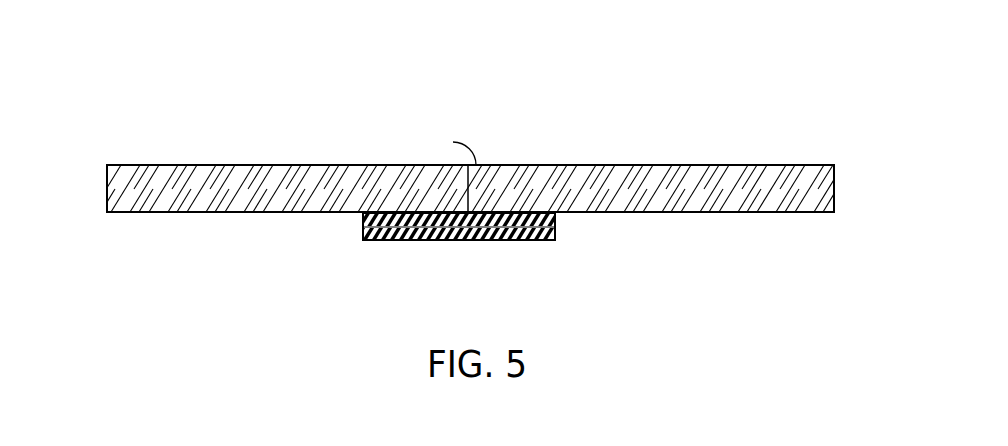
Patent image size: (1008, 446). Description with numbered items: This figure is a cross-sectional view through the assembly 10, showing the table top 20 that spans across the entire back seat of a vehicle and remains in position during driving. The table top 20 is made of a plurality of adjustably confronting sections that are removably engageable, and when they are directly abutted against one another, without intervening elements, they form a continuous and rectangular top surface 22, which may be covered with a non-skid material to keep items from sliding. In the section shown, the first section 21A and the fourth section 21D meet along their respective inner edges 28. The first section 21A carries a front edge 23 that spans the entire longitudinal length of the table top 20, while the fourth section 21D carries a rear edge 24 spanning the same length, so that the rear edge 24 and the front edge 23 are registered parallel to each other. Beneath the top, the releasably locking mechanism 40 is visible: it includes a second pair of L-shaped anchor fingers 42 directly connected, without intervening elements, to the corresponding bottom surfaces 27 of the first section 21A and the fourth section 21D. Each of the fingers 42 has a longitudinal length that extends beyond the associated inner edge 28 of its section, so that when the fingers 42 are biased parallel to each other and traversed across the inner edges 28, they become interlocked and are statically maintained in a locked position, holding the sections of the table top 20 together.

The assembly 10 is at (806, 50).
The table top 20 is at (477, 124).
The first section 21A is at (172, 170).
The fourth section 21D is at (603, 166).
The top surface 22 is at (252, 168).
The front edges 23 is at (107, 190).
The rear edges 24 is at (835, 165).
The bottom surfaces 27 is at (170, 214).
The inner edge 28 is at (463, 165).
The releasably locking mechanism 40 is at (448, 276).
The second pair of L-shaped anchor fingers 42 is at (363, 232).